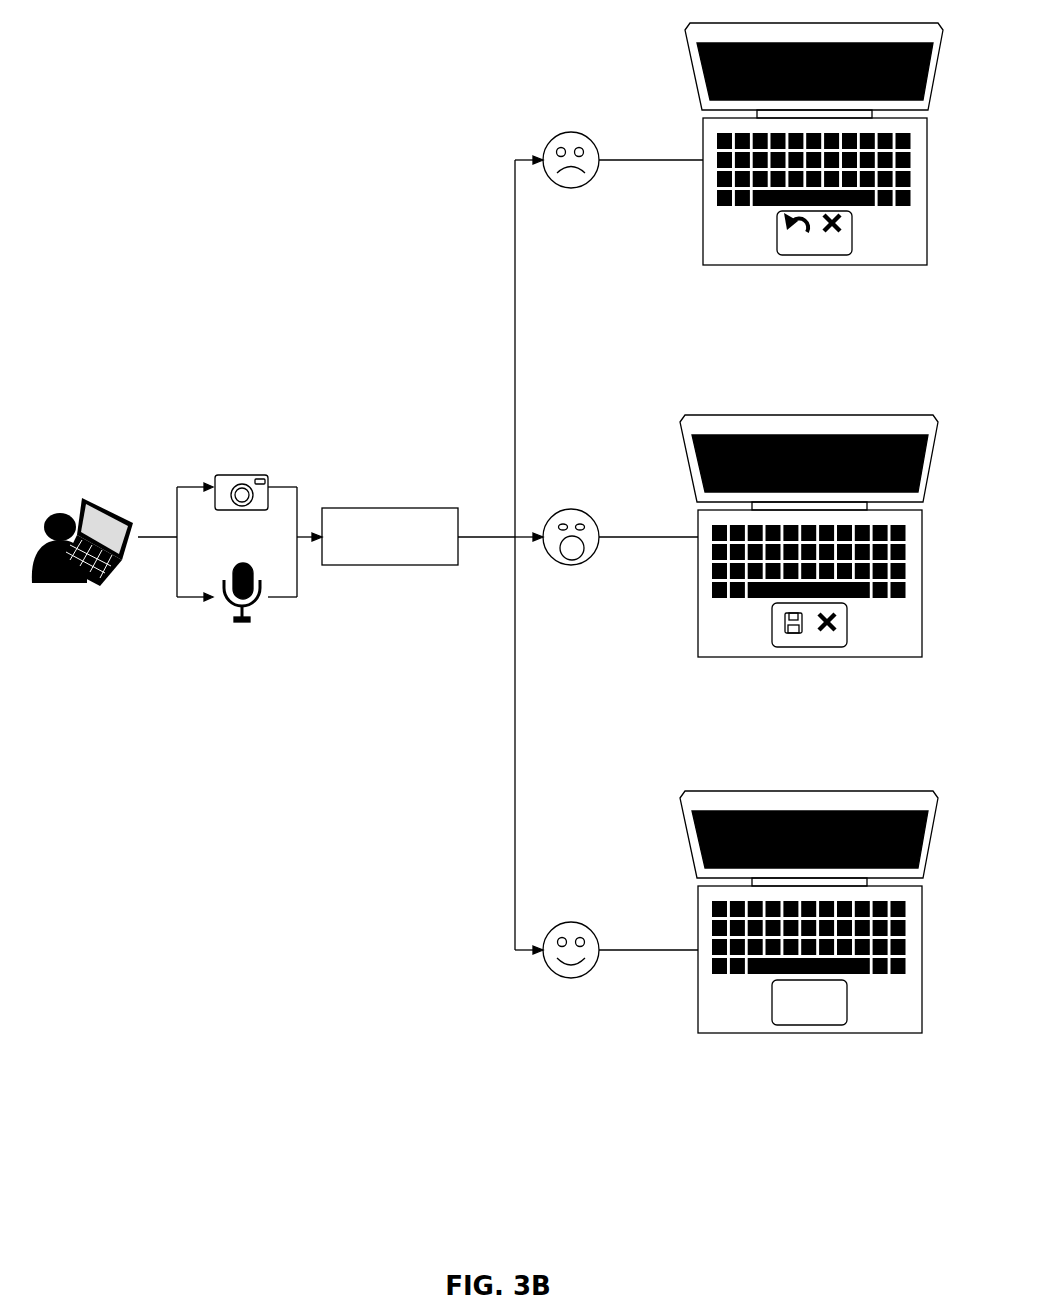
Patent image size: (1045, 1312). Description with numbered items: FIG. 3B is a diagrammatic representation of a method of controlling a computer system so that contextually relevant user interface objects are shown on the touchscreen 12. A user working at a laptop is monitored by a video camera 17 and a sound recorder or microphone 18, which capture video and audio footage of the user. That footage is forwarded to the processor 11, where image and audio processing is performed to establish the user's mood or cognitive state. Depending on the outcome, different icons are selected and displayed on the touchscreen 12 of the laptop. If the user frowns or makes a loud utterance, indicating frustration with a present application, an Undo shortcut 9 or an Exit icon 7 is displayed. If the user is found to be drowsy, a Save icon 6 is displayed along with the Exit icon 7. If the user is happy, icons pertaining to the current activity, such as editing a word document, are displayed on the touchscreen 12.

The video camera 17 is at (238, 475).
The sound recorder or microphone 18 is at (229, 617).
The processor 11 is at (378, 508).
The Undo shortcut 9 is at (787, 237).
The Exit icon 7 is at (826, 238).
The touchscreen 12 is at (841, 259).
The Save icon 6 is at (781, 638).